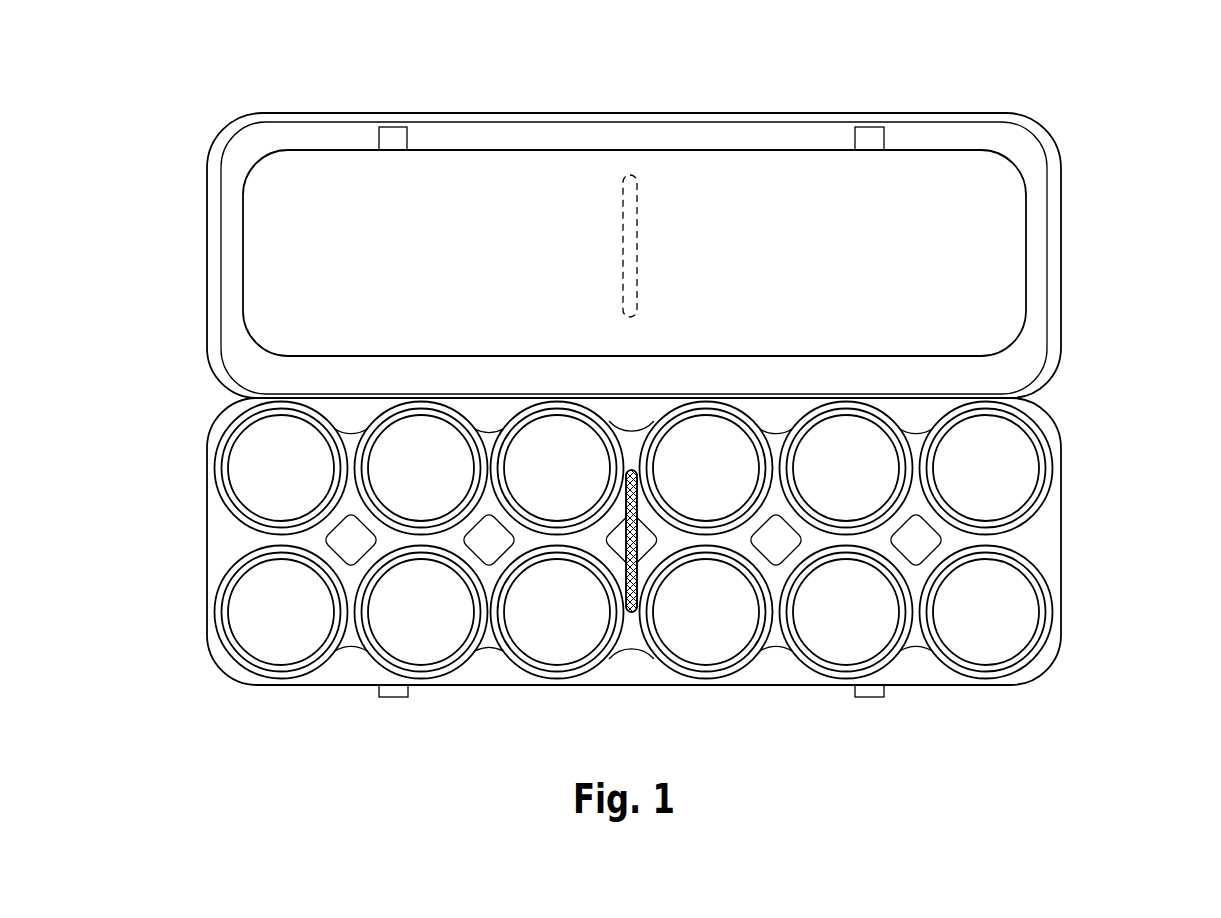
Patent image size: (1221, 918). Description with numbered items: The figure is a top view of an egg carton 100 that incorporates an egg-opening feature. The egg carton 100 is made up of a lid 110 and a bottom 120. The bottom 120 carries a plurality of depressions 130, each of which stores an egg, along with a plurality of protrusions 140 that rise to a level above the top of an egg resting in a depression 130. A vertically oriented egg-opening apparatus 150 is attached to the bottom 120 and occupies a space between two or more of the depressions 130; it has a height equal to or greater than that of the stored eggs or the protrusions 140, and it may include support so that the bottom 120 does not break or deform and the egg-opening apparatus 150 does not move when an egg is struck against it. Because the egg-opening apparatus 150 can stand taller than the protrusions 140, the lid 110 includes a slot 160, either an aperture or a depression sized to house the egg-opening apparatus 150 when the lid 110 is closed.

The egg carton 100 is at (673, 398).
The lid 110 is at (667, 233).
The bottom 120 is at (638, 570).
The depression 130 is at (243, 447).
The protrusion 140 is at (486, 568).
The egg-opening apparatus 150 is at (629, 612).
The slot 160 is at (623, 183).